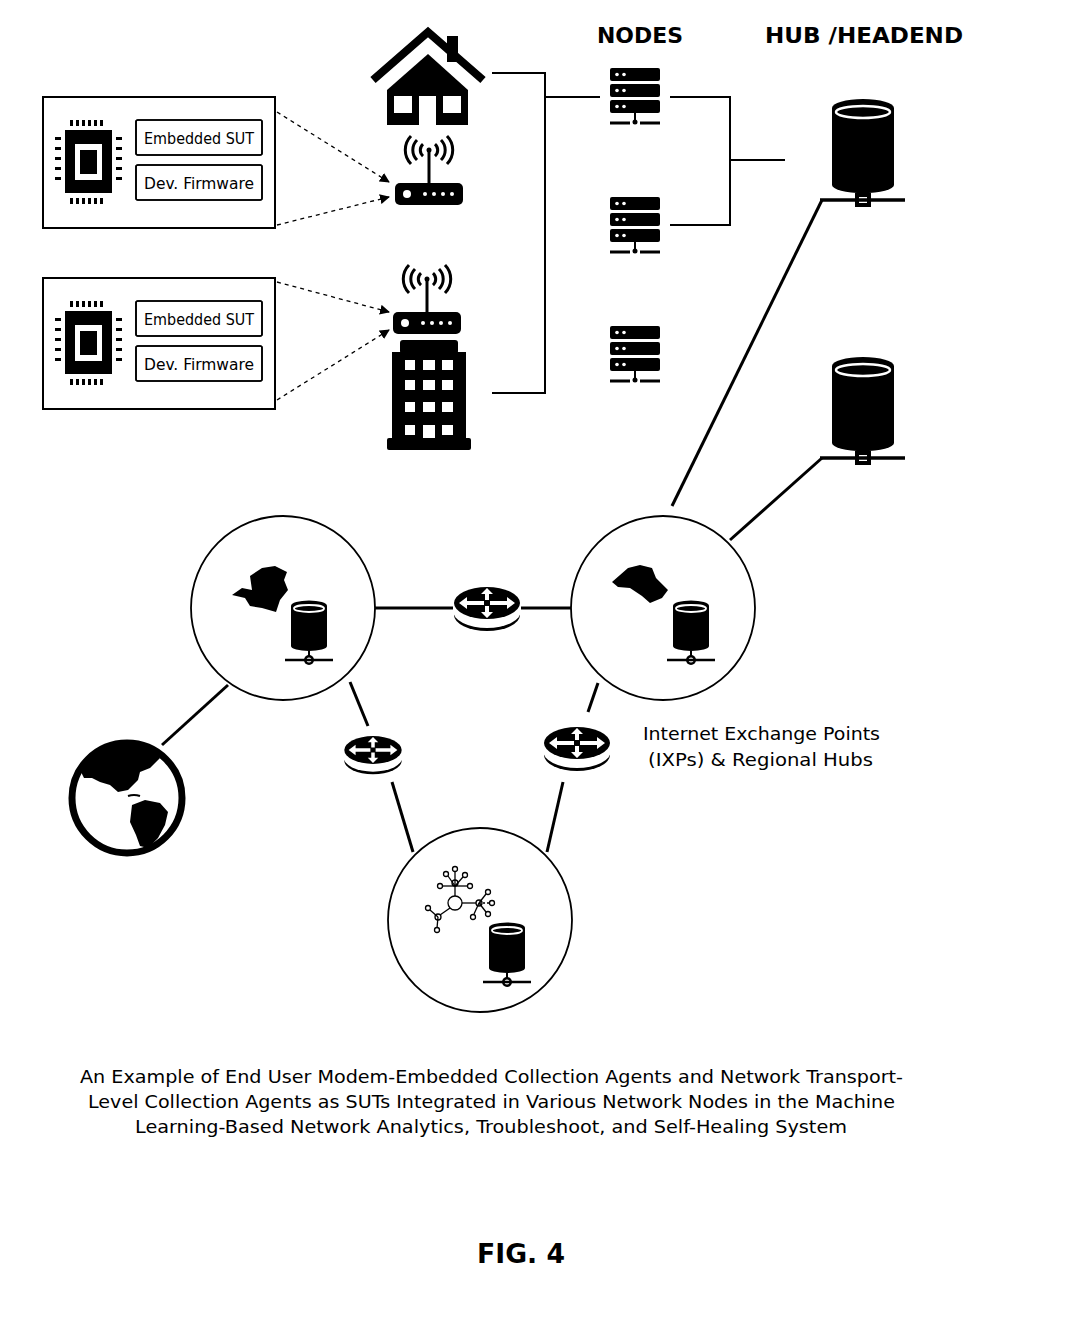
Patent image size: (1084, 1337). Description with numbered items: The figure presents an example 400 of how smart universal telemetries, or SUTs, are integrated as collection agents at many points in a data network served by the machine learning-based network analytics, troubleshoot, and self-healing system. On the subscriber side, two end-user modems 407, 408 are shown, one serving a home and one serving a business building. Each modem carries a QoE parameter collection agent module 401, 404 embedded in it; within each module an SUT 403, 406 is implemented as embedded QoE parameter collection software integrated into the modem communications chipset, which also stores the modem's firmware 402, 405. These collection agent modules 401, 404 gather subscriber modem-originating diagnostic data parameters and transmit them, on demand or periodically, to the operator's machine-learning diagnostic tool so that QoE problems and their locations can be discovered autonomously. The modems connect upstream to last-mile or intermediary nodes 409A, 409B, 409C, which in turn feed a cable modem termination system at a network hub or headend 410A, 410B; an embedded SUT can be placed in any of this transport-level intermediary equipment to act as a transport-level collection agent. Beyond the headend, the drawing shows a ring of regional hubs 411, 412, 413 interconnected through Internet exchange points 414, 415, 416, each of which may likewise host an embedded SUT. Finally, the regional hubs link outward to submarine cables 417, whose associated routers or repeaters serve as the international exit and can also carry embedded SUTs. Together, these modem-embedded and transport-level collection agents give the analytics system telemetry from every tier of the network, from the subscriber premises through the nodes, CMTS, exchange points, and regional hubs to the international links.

The example of end user modem-embedded collection agents and network transport-level 400 is at (531, 1203).
The QoE parameter collection agent module 401 is at (58, 412).
The modem firmware 402 is at (192, 390).
The smart universal telemetry (SUT) 403 is at (172, 298).
The QoE parameter collection agent module 404 is at (58, 95).
The modem firmware 405 is at (214, 204).
The smart universal telemetry (SUT) 406 is at (207, 117).
The end-user modem 407 is at (449, 170).
The end-user modem 408 is at (446, 299).
The last-mile or intermediary node 409A is at (637, 113).
The last-mile or intermediary node 409B is at (637, 242).
The last-mile or intermediary node 409C is at (638, 374).
The cable modem termination system (CMTS) at network hub or headend 410A is at (885, 177).
The cable modem termination system (CMTS) at network hub or headend 410B is at (885, 434).
The regional hub 411 is at (663, 608).
The regional hub 412 is at (283, 608).
The regional hub 413 is at (480, 920).
The Internet exchange point (IXP) 414 is at (487, 595).
The Internet exchange point (IXP) 415 is at (378, 741).
The Internet exchange point (IXP) 416 is at (572, 736).
The submarine cables 417 is at (186, 851).